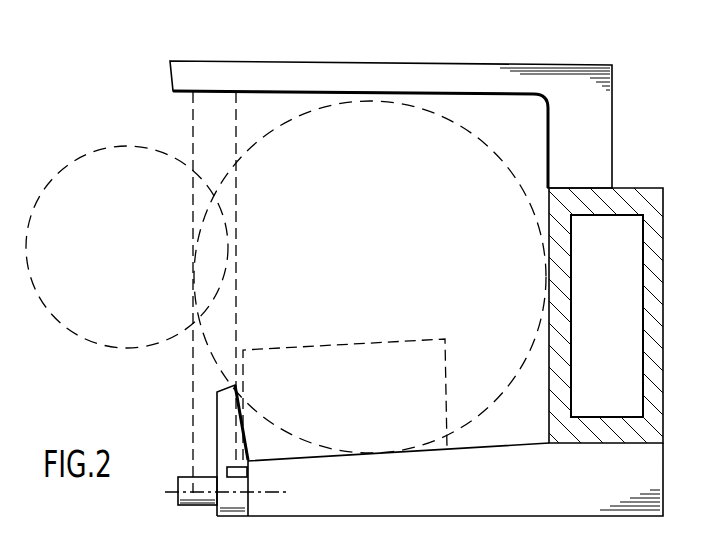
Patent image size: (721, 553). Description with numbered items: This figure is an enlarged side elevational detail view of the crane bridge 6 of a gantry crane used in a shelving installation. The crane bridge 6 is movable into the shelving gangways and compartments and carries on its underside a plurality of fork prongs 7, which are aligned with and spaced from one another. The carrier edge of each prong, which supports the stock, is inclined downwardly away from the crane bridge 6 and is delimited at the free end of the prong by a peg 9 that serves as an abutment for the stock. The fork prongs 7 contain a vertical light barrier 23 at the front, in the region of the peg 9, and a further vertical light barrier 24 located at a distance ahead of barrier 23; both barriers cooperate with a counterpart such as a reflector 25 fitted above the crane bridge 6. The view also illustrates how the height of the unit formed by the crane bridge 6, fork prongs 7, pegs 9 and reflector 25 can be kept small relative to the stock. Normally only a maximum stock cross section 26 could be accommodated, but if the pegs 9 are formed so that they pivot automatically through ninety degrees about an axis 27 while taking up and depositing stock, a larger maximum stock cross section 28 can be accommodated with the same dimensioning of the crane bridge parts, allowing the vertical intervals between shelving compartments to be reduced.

The crane bridge 6 is at (650, 243).
The fork prongs 7 is at (590, 485).
The peg 9 is at (222, 430).
The vertical light barrier 23 is at (227, 470).
The further vertical light barrier 24 is at (193, 502).
The reflector 25 is at (281, 79).
The maximum stock cross section 26 is at (103, 160).
The axis 27 is at (279, 493).
The maximum stock cross section 28 is at (489, 169).